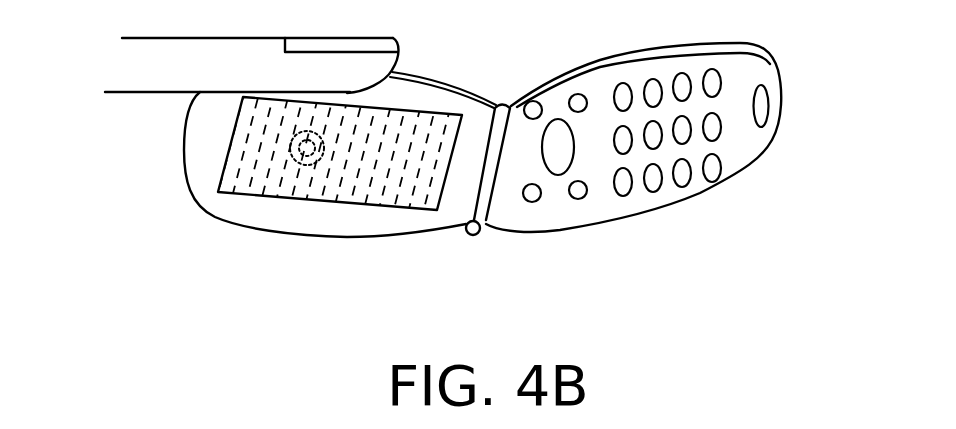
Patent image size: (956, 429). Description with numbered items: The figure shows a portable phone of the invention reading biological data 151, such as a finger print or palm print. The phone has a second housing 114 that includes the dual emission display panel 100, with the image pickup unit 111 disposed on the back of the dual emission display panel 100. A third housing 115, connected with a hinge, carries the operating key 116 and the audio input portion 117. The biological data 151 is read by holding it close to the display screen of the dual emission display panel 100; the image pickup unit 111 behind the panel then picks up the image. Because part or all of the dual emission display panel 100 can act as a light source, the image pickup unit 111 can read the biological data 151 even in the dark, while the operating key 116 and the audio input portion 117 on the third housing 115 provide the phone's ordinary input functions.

The dual emission display panel 100 is at (407, 200).
The image pickup unit 111 is at (307, 150).
The second housing 114 is at (467, 98).
The third housing 115 is at (587, 218).
The operating key 116 is at (725, 200).
The audio input portion 117 is at (763, 125).
The biological data 151 is at (280, 80).